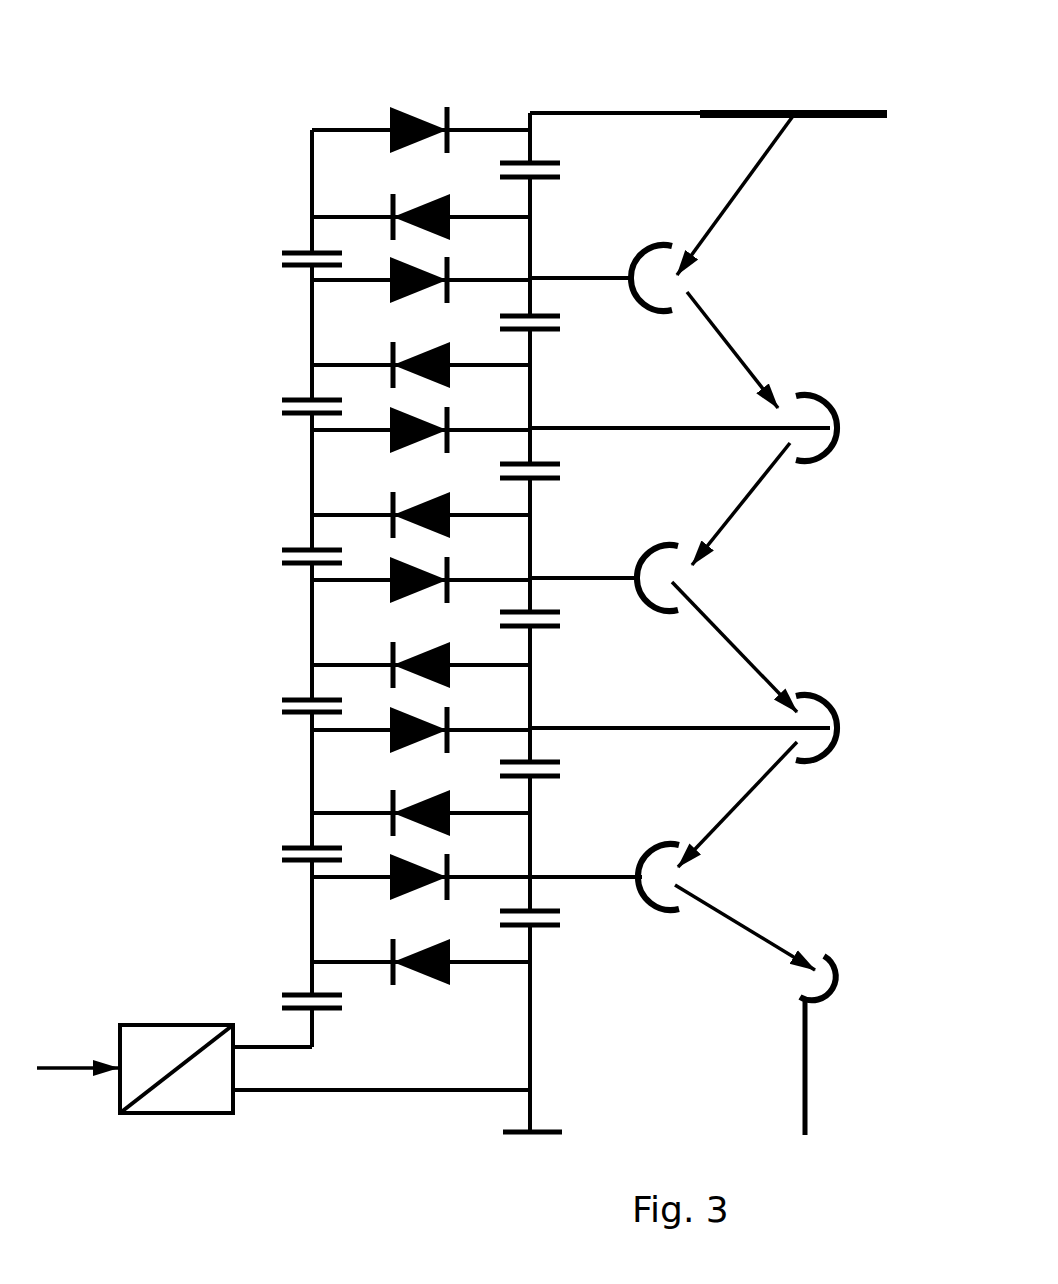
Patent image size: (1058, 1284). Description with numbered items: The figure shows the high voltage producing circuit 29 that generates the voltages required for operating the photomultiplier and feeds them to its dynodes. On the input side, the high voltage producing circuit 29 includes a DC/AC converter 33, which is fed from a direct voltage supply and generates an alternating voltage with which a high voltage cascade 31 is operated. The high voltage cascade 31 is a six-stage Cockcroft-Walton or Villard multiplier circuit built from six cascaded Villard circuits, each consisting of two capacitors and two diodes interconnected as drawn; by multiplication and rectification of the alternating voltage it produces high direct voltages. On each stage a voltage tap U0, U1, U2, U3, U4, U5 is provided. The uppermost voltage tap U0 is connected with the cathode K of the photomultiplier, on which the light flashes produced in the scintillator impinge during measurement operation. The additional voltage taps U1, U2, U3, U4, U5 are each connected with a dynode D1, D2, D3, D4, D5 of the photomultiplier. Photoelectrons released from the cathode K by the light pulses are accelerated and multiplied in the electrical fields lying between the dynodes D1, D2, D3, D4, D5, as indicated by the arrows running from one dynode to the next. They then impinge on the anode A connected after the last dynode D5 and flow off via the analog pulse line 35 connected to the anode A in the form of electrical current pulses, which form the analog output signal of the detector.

The high voltage producing circuit 29 is at (145, 415).
The high voltage cascade 31 is at (310, 352).
The DC/AC converter 33 is at (178, 1025).
The analog pulse line 35 is at (807, 1085).
The cathode K is at (838, 113).
The anode A is at (838, 958).
The dynode D1 is at (674, 243).
The dynode D2 is at (830, 402).
The dynode D3 is at (660, 546).
The dynode D4 is at (830, 702).
The dynode D5 is at (652, 910).
The voltage tap U0 is at (530, 113).
The voltage tap U1 is at (530, 278).
The voltage tap U2 is at (530, 428).
The voltage tap U3 is at (530, 578).
The voltage tap U4 is at (530, 728).
The voltage tap U5 is at (530, 877).